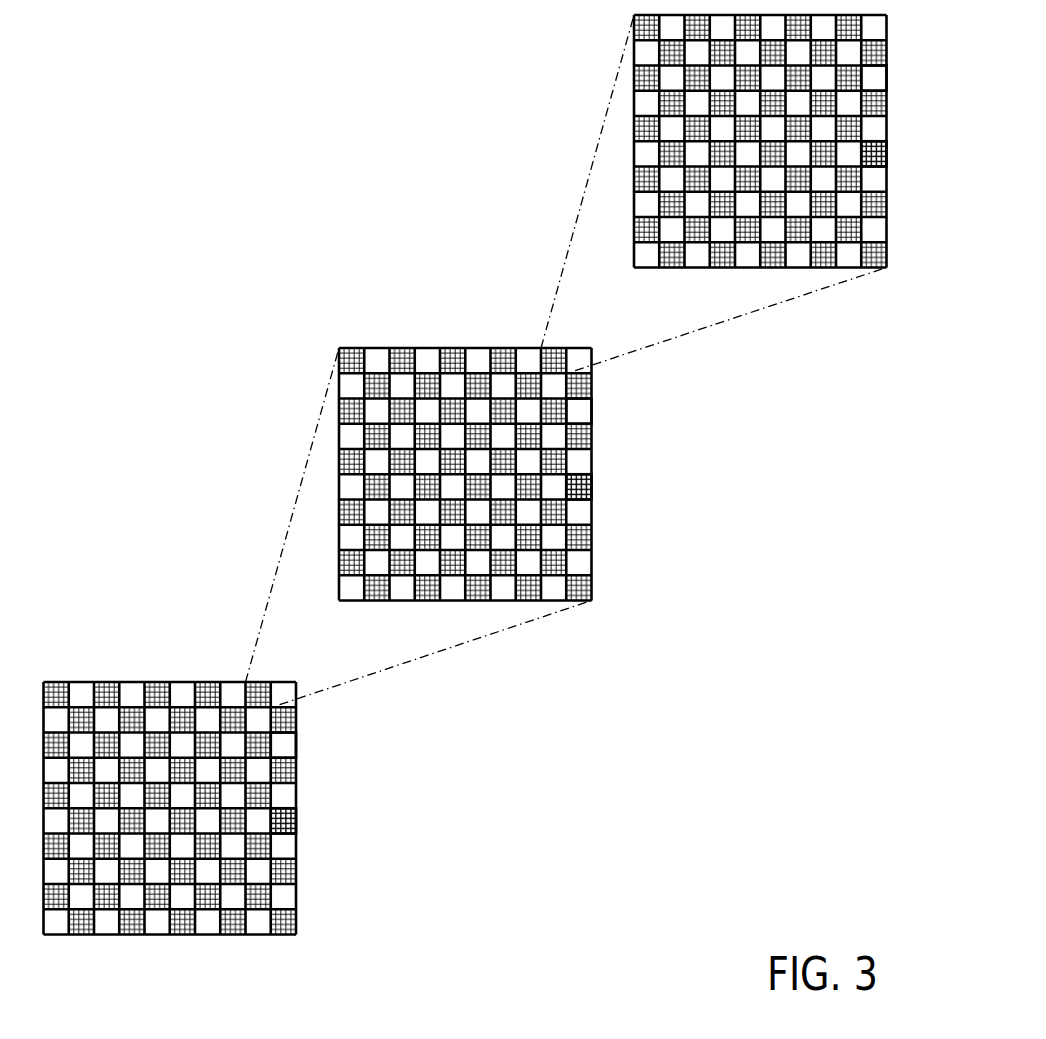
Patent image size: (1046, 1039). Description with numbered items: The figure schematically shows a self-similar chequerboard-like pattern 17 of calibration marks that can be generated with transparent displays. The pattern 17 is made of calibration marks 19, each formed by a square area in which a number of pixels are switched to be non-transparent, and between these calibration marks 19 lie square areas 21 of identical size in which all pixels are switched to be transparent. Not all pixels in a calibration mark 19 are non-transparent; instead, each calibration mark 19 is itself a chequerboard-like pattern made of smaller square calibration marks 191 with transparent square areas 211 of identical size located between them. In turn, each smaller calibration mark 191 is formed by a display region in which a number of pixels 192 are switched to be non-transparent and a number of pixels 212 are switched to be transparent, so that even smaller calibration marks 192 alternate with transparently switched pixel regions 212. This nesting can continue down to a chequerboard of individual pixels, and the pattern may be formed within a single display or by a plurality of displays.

The chequerboard-like pattern 17 is at (246, 808).
The calibration mark 19 is at (285, 817).
The square area 21 is at (285, 745).
The smaller calibration mark 191 is at (578, 487).
The transparent square area 211 is at (578, 413).
The pixel 192 is at (873, 151).
The transparently switched pixel region 212 is at (873, 79).